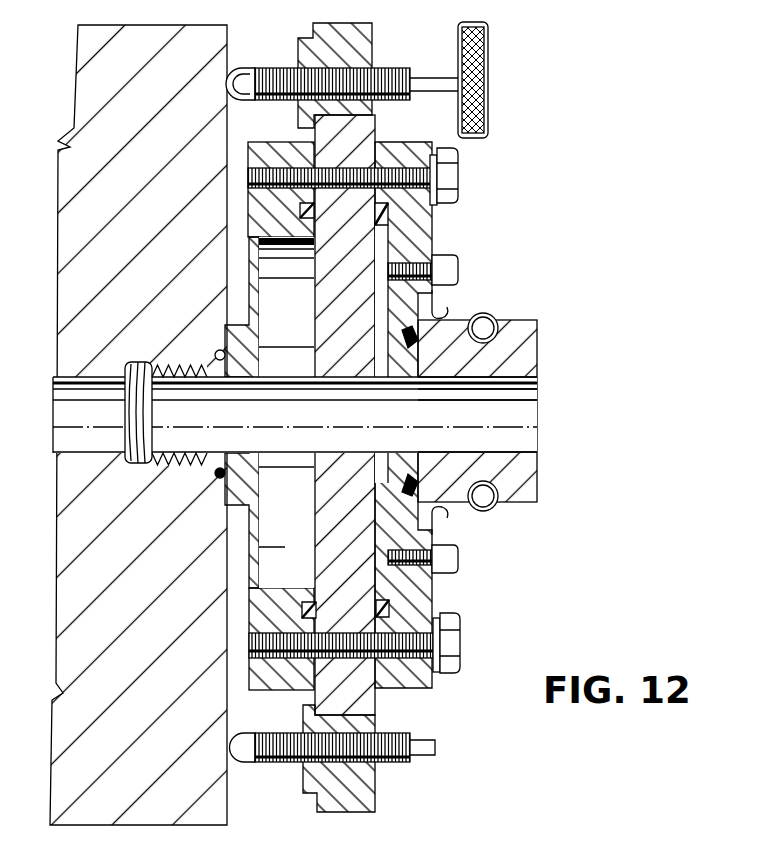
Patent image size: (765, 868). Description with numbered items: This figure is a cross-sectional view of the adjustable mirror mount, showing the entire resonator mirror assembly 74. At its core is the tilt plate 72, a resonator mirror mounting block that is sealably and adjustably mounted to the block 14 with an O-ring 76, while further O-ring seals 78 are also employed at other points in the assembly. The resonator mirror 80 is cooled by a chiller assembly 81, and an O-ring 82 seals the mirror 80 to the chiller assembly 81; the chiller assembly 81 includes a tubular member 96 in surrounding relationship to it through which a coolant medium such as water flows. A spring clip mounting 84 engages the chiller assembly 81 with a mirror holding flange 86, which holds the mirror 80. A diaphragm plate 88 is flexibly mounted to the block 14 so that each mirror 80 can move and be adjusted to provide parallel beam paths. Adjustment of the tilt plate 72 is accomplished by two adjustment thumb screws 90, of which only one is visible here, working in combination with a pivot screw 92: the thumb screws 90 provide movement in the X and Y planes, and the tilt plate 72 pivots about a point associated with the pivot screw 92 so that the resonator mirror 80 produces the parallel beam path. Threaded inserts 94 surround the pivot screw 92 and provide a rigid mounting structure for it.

The block 14 is at (207, 25).
The tilt plate 72 is at (360, 128).
The resonator mirror assembly 74 is at (537, 178).
The O-ring 76 is at (213, 472).
The O-ring seals 78 is at (310, 606).
The mirror 80 is at (418, 415).
The chiller assembly 81 is at (537, 322).
The O-ring 82 is at (418, 338).
The spring clip mounting 84 is at (432, 517).
The mirror holding flange 86 is at (421, 688).
The diaphragm plate 88 is at (259, 292).
The adjustment thumb screw 90 is at (488, 52).
The pivot screw 92 is at (435, 755).
The threaded inserts 94 is at (298, 44).
The tubular member 96 is at (492, 506).